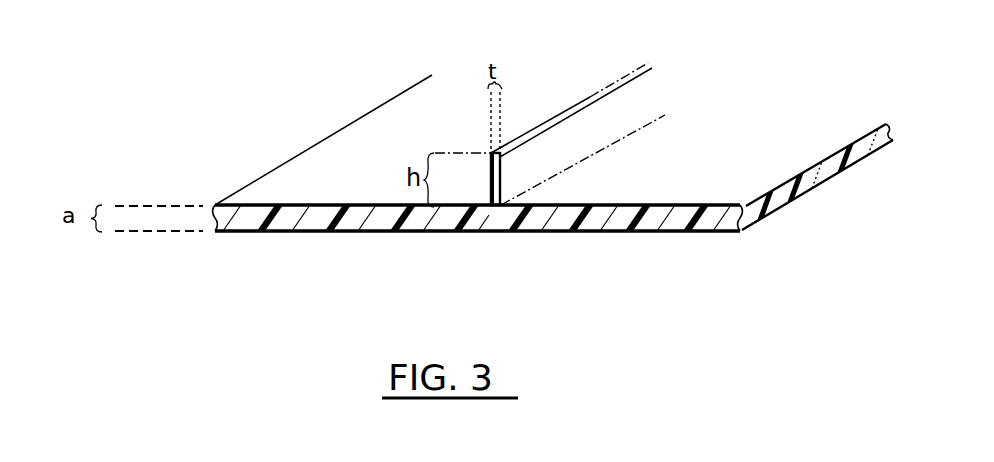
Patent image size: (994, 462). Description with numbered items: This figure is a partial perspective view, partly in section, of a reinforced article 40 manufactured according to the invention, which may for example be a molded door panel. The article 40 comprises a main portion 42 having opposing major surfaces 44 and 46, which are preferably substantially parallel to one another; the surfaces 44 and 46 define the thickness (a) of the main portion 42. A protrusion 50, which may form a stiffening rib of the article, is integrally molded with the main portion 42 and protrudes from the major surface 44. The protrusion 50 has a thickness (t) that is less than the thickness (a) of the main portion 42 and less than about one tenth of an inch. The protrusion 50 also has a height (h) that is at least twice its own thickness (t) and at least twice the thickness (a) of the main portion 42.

The article 40 is at (303, 141).
The main portion 42 is at (745, 178).
The major surface 44 is at (625, 205).
The major surface 46 is at (609, 247).
The protrusion 50 is at (600, 122).